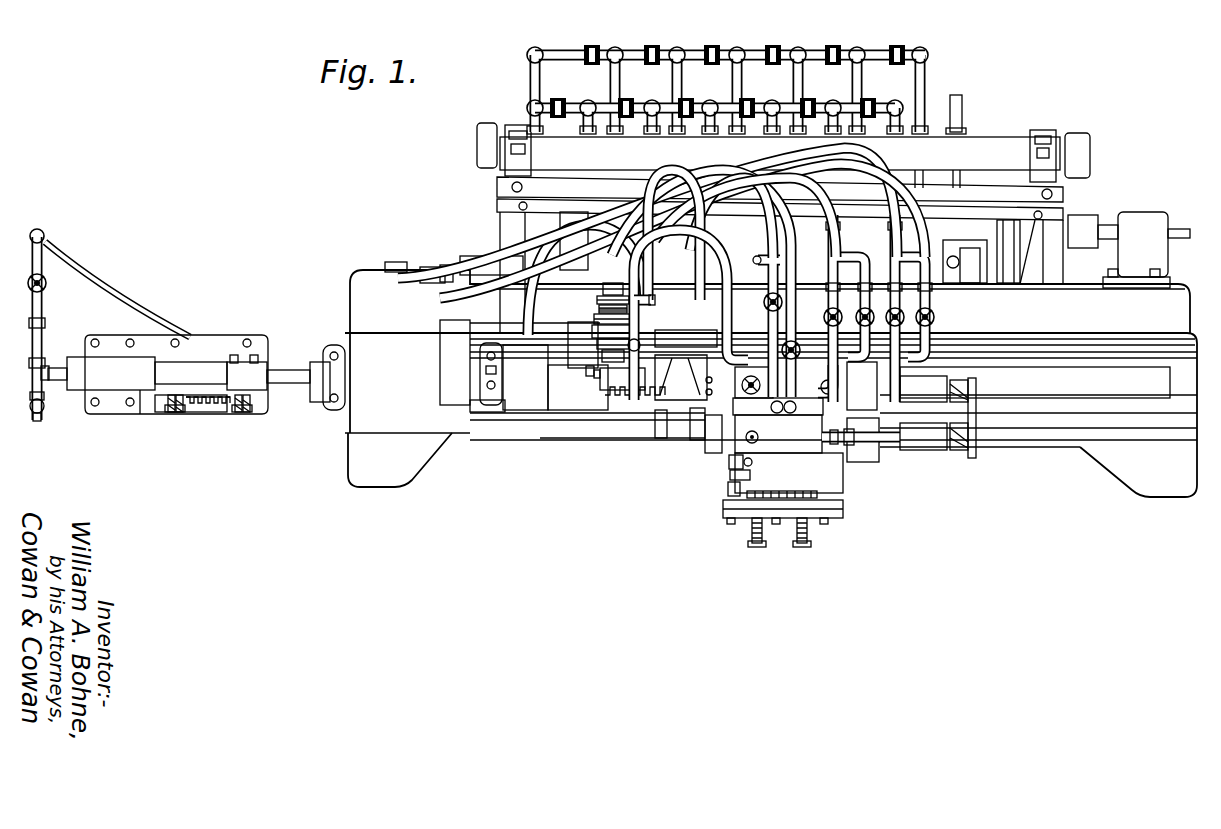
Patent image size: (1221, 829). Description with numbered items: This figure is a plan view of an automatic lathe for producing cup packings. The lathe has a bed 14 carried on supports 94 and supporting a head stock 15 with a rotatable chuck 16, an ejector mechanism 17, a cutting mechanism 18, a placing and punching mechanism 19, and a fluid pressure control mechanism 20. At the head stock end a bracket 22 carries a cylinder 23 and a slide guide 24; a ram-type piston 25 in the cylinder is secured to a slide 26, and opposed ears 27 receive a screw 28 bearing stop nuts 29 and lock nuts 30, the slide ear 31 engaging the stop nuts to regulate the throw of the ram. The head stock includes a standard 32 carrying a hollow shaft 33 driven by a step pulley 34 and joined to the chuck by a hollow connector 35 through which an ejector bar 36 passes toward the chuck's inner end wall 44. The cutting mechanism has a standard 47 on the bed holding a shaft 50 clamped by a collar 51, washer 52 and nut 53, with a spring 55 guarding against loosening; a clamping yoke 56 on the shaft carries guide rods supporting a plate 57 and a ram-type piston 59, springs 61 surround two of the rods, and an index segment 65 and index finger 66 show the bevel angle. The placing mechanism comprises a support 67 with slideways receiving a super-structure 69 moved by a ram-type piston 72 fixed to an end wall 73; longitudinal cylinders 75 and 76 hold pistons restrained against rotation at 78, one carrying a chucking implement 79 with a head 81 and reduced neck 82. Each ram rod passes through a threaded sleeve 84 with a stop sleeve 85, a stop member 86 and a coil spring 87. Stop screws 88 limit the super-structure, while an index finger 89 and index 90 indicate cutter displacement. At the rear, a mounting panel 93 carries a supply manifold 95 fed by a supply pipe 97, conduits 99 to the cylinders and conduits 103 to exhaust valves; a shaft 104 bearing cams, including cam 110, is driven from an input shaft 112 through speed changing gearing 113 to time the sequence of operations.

The bed 14 is at (1055, 408).
The head stock 15 is at (489, 412).
The chuck 16 is at (572, 403).
The ejector mechanism 17 is at (110, 422).
The cutting mechanism 18 is at (652, 422).
The mechanism for placing cup packings and punching central opening 19 is at (712, 524).
The fluid pressure control mechanism 20 is at (482, 181).
The bracket 22 is at (306, 415).
The cylinder 23 is at (101, 373).
The slide guide 24 is at (222, 337).
The ram-type piston 25 is at (191, 373).
The slide 26 is at (245, 360).
The ears 27 is at (153, 413).
The screw 28 is at (203, 413).
The stop nuts 29 is at (177, 413).
The lock nuts 30 is at (168, 413).
The ear 31 is at (208, 412).
The standard 32 is at (500, 413).
The hollow shaft 33 is at (347, 352).
The step pulley 34 is at (400, 408).
The connector 35 is at (531, 412).
The ejector bar 36 is at (289, 370).
The inner end wall 44 is at (594, 326).
The standard 47 is at (612, 428).
The shaft 50 is at (613, 283).
The collar 51 is at (640, 348).
The washer 52 is at (640, 322).
The nut 53 is at (597, 300).
The spring 55 is at (599, 309).
The clamping yoke 56 is at (600, 380).
The plate 57 is at (700, 380).
The ram-type piston 59 is at (678, 372).
The springs 61 is at (640, 400).
The index segment 65 is at (586, 367).
The index finger 66 is at (585, 374).
The support 67 is at (842, 509).
The super-structure 69 is at (832, 473).
The ram-type piston 72 is at (778, 491).
The end wall 73 is at (748, 513).
The cylinder 75 is at (778, 434).
The cylinder 76 is at (784, 390).
The means holding pistons against rotation 78 is at (758, 436).
The chucking implement 79 is at (708, 443).
The head 81 is at (662, 440).
The reduced neck 82 is at (697, 436).
The threaded sleeve 84 is at (851, 412).
The stop sleeve 85 is at (913, 413).
The stop member 86 is at (976, 416).
The coil spring 87 is at (954, 415).
The stop screws 88 is at (757, 546).
The index finger 89 is at (728, 486).
The index 90 is at (733, 466).
The mounting panel 93 is at (1034, 292).
The supports 94 is at (362, 272).
The supply manifold 95 is at (783, 171).
The supply pipe 97 is at (963, 122).
The conduit 99 is at (581, 103).
The conduit 103 is at (565, 48).
The shaft 104 is at (1083, 216).
The cam 110 is at (987, 258).
The input shaft 112 is at (1180, 229).
The speed changing gearing 113 is at (1143, 213).